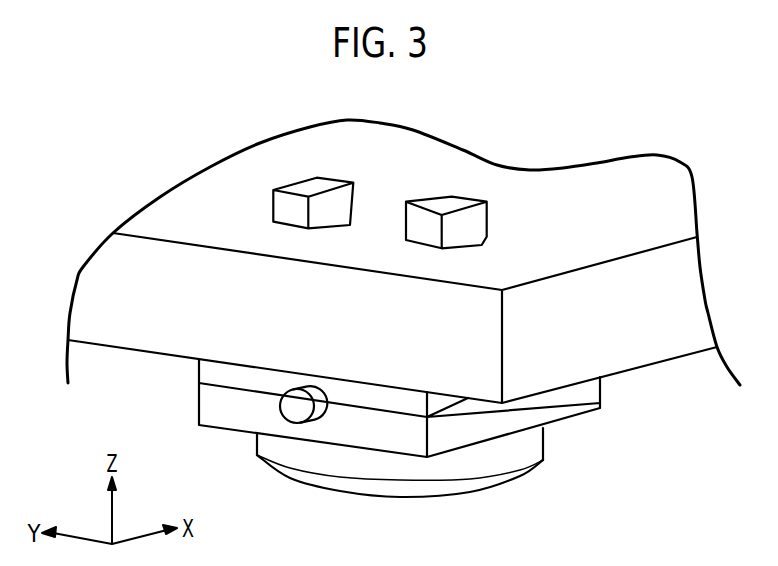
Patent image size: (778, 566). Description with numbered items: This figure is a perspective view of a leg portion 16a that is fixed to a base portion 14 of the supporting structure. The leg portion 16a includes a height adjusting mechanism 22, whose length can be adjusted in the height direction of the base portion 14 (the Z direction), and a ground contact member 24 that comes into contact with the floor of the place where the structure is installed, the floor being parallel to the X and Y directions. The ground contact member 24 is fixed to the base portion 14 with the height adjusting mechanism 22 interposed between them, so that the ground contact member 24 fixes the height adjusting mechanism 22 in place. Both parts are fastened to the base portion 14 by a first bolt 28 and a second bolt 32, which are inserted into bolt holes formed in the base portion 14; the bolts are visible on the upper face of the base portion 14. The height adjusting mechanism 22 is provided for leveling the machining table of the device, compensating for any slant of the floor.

The base portion 14 is at (137, 315).
The first bolt 28 is at (283, 207).
The second bolt 32 is at (473, 224).
The height adjusting mechanism 22 is at (603, 406).
The ground contact member 24 is at (528, 449).
The leg portion 16a is at (463, 428).